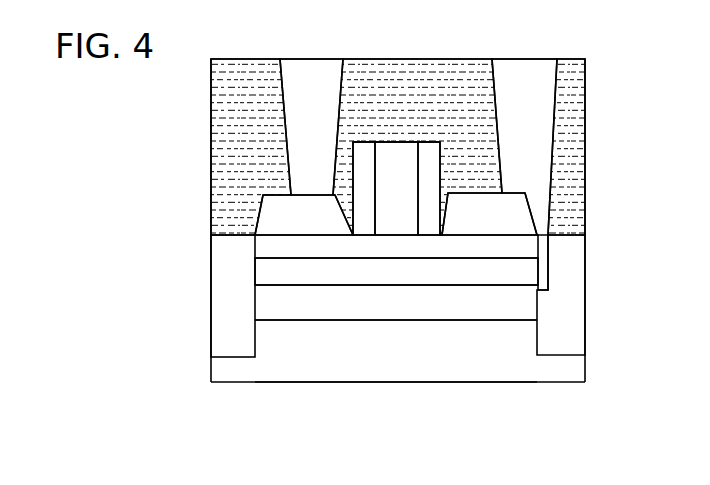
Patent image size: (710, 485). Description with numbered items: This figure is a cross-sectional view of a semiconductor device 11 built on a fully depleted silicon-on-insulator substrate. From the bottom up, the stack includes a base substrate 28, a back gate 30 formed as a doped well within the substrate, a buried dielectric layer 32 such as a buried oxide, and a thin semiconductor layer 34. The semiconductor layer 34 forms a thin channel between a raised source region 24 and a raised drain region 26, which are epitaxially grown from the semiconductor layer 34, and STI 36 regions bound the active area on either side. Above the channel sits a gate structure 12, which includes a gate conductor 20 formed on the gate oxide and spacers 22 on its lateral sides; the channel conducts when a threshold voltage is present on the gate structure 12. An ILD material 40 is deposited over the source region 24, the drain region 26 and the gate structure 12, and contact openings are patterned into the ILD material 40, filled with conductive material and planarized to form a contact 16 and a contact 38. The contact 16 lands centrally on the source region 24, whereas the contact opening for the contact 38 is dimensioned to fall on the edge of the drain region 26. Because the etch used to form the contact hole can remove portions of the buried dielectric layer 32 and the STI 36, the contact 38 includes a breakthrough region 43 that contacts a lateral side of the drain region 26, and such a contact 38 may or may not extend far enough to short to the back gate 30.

The device 11 is at (96, 141).
The gate structure 12 is at (396, 134).
The contact 16 is at (303, 127).
The gate conductor 20 is at (411, 210).
The spacers 22 is at (365, 153).
The source region 24 is at (285, 217).
The drain region 26 is at (508, 215).
The base substrate 28 is at (558, 365).
The back gate 30 is at (388, 300).
The buried dielectric layer 32 is at (297, 278).
The semiconductor layer 34 is at (297, 248).
The STI 36 is at (228, 313).
The contact 38 is at (507, 100).
The ILD material 40 is at (570, 78).
The breakthrough regions 43 is at (543, 255).